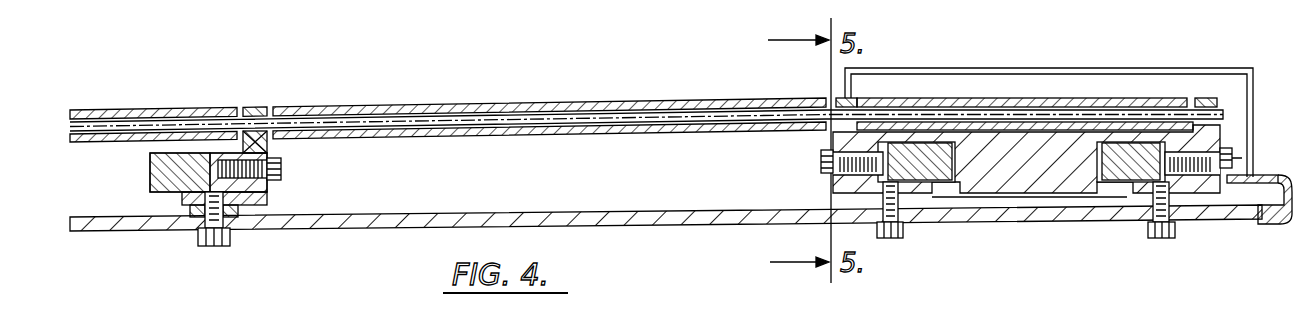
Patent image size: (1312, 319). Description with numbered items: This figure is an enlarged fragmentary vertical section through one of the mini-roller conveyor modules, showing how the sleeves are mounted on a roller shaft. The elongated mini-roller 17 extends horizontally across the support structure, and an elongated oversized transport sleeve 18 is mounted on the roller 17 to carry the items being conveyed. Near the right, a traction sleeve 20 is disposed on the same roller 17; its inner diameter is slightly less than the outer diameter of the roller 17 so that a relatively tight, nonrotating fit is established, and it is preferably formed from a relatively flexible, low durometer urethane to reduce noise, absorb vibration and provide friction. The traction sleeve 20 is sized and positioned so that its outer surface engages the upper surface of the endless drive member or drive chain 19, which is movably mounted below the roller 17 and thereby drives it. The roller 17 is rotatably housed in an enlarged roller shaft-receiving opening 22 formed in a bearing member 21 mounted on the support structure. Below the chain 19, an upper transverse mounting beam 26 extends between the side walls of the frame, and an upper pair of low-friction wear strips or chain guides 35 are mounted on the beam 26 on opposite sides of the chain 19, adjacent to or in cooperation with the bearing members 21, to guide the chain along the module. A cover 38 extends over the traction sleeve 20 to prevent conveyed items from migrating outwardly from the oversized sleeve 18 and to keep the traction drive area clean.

The mini-roller 17 is at (897, 113).
The oversized transport sleeve 18 is at (471, 100).
The endless drive member 19 is at (1056, 194).
The traction sleeve 20 is at (998, 100).
The bearing member 21 is at (262, 140).
The roller shaft-receiving enlarged opening 22 is at (252, 107).
The upper transverse mounting beam 26 is at (991, 221).
The upper wear strip or chain guide 35 is at (930, 165).
The cover 38 is at (1117, 68).